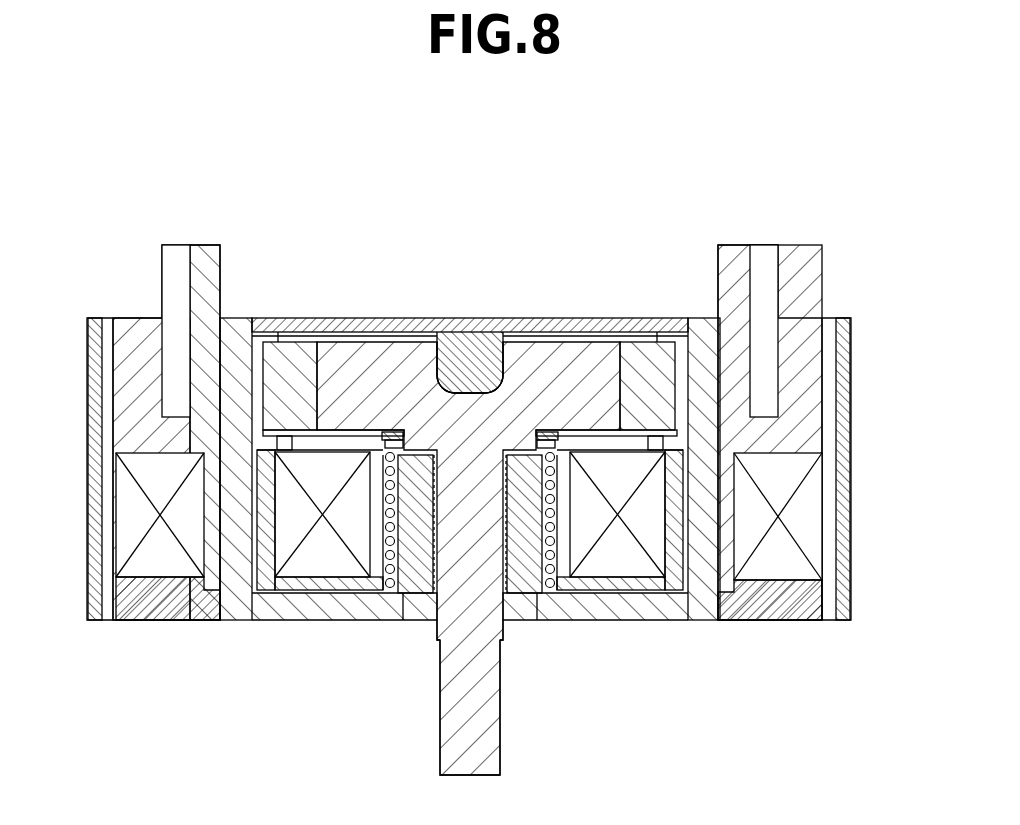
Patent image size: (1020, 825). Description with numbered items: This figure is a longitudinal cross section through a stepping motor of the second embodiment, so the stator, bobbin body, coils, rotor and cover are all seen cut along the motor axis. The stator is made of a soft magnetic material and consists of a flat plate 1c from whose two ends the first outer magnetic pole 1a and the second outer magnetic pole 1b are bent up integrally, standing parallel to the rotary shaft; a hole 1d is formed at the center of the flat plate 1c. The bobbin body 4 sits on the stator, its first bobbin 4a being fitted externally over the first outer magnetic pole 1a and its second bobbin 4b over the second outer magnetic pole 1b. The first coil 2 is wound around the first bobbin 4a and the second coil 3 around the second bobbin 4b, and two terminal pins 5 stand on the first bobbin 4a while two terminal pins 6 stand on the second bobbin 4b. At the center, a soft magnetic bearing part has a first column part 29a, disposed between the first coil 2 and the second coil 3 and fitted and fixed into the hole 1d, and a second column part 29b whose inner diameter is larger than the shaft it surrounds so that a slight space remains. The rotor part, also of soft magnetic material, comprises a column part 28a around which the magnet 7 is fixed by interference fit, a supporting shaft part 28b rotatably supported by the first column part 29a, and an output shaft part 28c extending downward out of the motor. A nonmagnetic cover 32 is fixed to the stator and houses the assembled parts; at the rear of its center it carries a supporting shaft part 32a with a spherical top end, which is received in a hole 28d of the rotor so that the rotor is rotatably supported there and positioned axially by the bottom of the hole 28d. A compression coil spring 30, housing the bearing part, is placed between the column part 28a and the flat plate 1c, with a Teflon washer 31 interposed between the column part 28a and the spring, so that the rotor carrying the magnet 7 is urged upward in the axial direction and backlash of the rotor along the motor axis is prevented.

The first outer magnetic pole 1a is at (238, 335).
The second outer magnetic pole 1b is at (700, 350).
The flat plate 1c is at (620, 612).
The hole 1d is at (392, 600).
The first coil 2 is at (150, 562).
The second coil 3 is at (798, 567).
The bobbin body 4 is at (184, 590).
The first bobbin 4a is at (137, 335).
The second bobbin 4b is at (805, 330).
The terminal pins 5 is at (167, 270).
The terminal pins 6 is at (767, 293).
The magnet 7 is at (637, 358).
The column part 28a is at (541, 358).
The supporting shaft part 28b is at (505, 632).
The output shaft part 28c is at (483, 745).
The hole 28d is at (437, 382).
The first column part 29a is at (420, 603).
The second column part 29b is at (518, 517).
The compression coil spring 30 is at (385, 503).
The washer 31 is at (543, 428).
The cover 32 is at (303, 322).
The supporting shaft part 32a is at (467, 375).